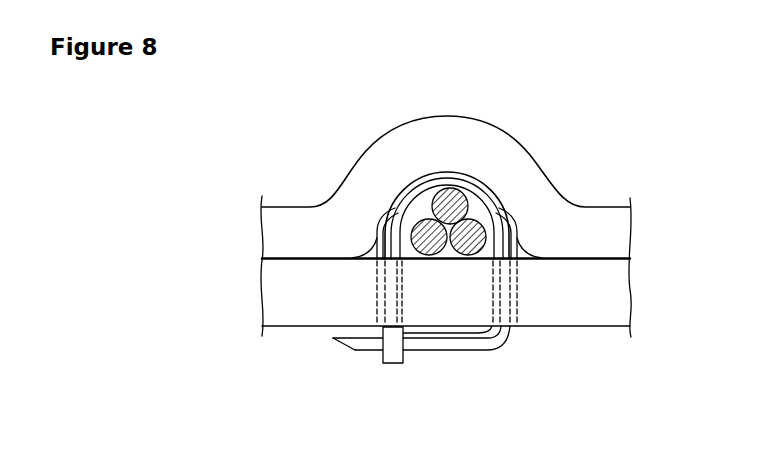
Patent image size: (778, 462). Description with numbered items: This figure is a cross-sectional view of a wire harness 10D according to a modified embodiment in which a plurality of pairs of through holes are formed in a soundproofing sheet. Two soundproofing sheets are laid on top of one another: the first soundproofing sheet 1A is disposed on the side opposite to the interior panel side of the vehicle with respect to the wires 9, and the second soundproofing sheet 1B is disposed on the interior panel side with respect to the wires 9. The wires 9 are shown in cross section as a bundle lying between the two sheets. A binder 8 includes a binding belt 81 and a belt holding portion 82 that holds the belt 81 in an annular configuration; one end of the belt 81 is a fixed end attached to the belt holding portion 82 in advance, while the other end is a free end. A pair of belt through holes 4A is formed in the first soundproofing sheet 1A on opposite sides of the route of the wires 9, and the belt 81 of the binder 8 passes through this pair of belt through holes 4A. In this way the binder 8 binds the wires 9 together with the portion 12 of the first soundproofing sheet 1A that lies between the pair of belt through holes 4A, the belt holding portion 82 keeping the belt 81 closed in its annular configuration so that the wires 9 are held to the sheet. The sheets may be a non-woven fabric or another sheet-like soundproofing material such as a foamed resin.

The wire harness 10D is at (625, 93).
The first soundproofing sheet 1A is at (592, 327).
The second soundproofing sheet 1B is at (598, 207).
The belt through holes 4A is at (377, 241).
The binder 8 is at (463, 353).
The binding belt 81 is at (410, 183).
The belt holding portion 82 is at (395, 363).
The wires 9 is at (468, 226).
The portion between a pair of belt through holes 12 is at (374, 247).